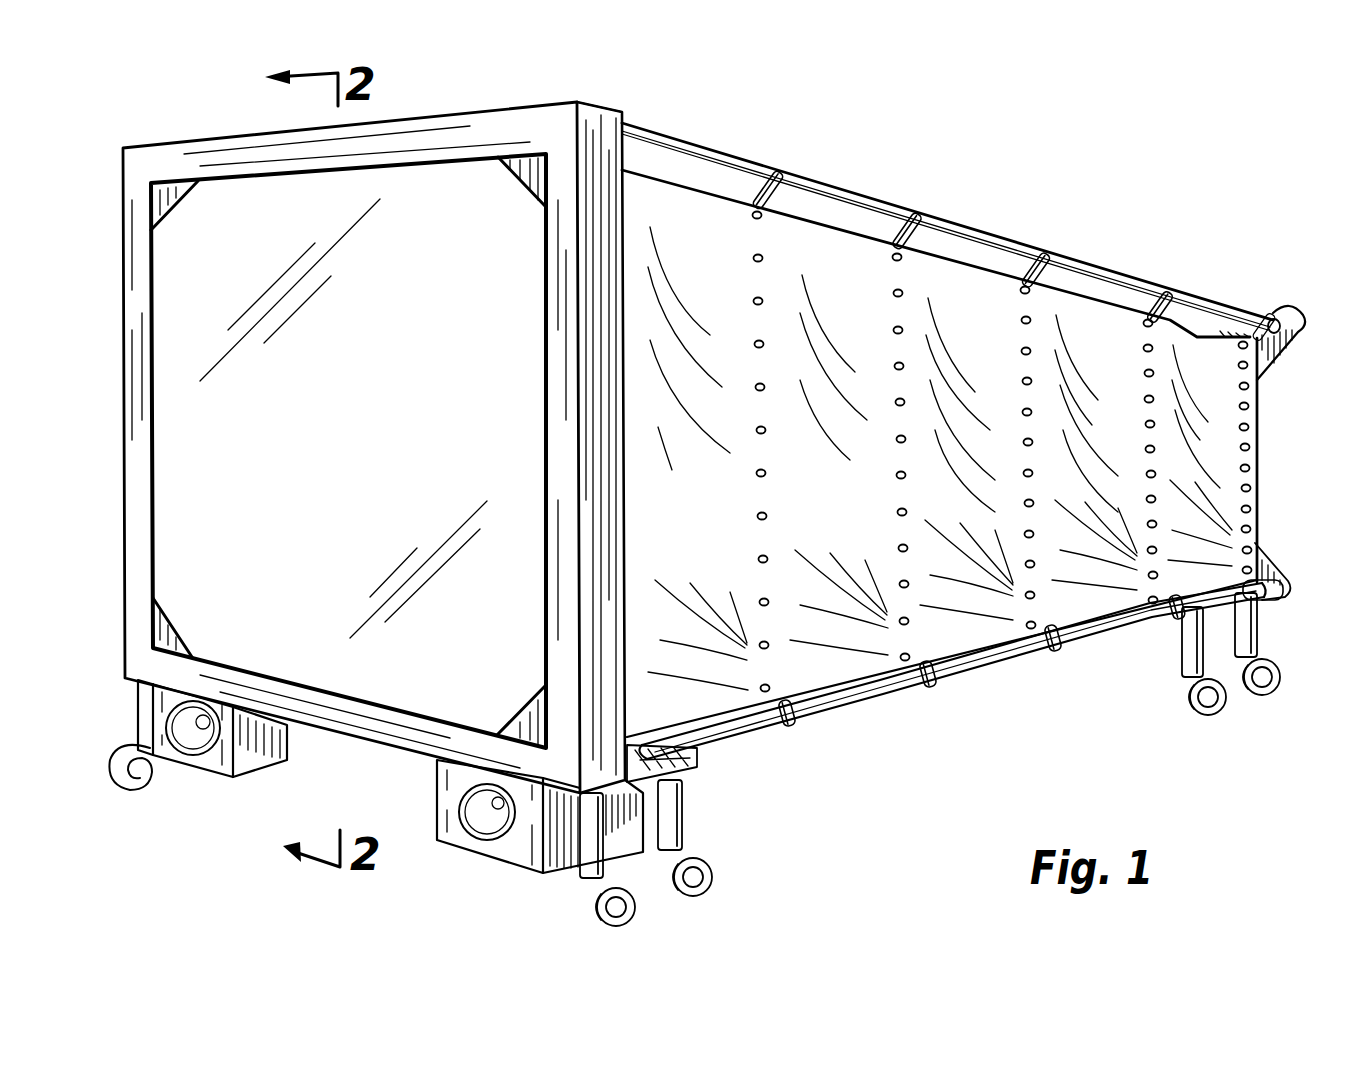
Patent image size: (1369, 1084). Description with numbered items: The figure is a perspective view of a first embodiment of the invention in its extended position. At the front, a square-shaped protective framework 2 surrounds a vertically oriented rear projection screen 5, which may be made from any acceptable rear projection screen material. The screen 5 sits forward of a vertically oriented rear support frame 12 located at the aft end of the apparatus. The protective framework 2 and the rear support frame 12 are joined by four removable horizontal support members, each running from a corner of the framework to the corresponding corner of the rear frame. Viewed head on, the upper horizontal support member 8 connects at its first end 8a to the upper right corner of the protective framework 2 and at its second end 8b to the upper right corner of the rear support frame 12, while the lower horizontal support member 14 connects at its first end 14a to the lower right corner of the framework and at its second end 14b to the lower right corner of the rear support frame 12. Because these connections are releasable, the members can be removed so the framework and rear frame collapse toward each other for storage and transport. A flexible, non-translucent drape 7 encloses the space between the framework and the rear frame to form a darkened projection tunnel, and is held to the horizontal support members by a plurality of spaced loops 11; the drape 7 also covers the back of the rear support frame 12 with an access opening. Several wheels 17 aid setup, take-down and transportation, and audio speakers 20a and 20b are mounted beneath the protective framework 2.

The protective framework 2 is at (466, 141).
The rear projection screen 5 is at (390, 412).
The flexible drape 7 is at (870, 310).
The upper horizontal support member 8 is at (987, 240).
The first end of upper horizontal support member 8a is at (622, 125).
The second end of upper horizontal support member 8b is at (1273, 313).
The spaced loops 11 is at (917, 212).
The rear support frame 12 is at (1258, 428).
The lower horizontal support member 14 is at (987, 657).
The first end of lower horizontal support member 14a is at (678, 751).
The second end of lower horizontal support member 14b is at (1285, 601).
The wheels 17 is at (635, 917).
The audio speaker 20a is at (210, 767).
The audio speaker 20b is at (498, 860).